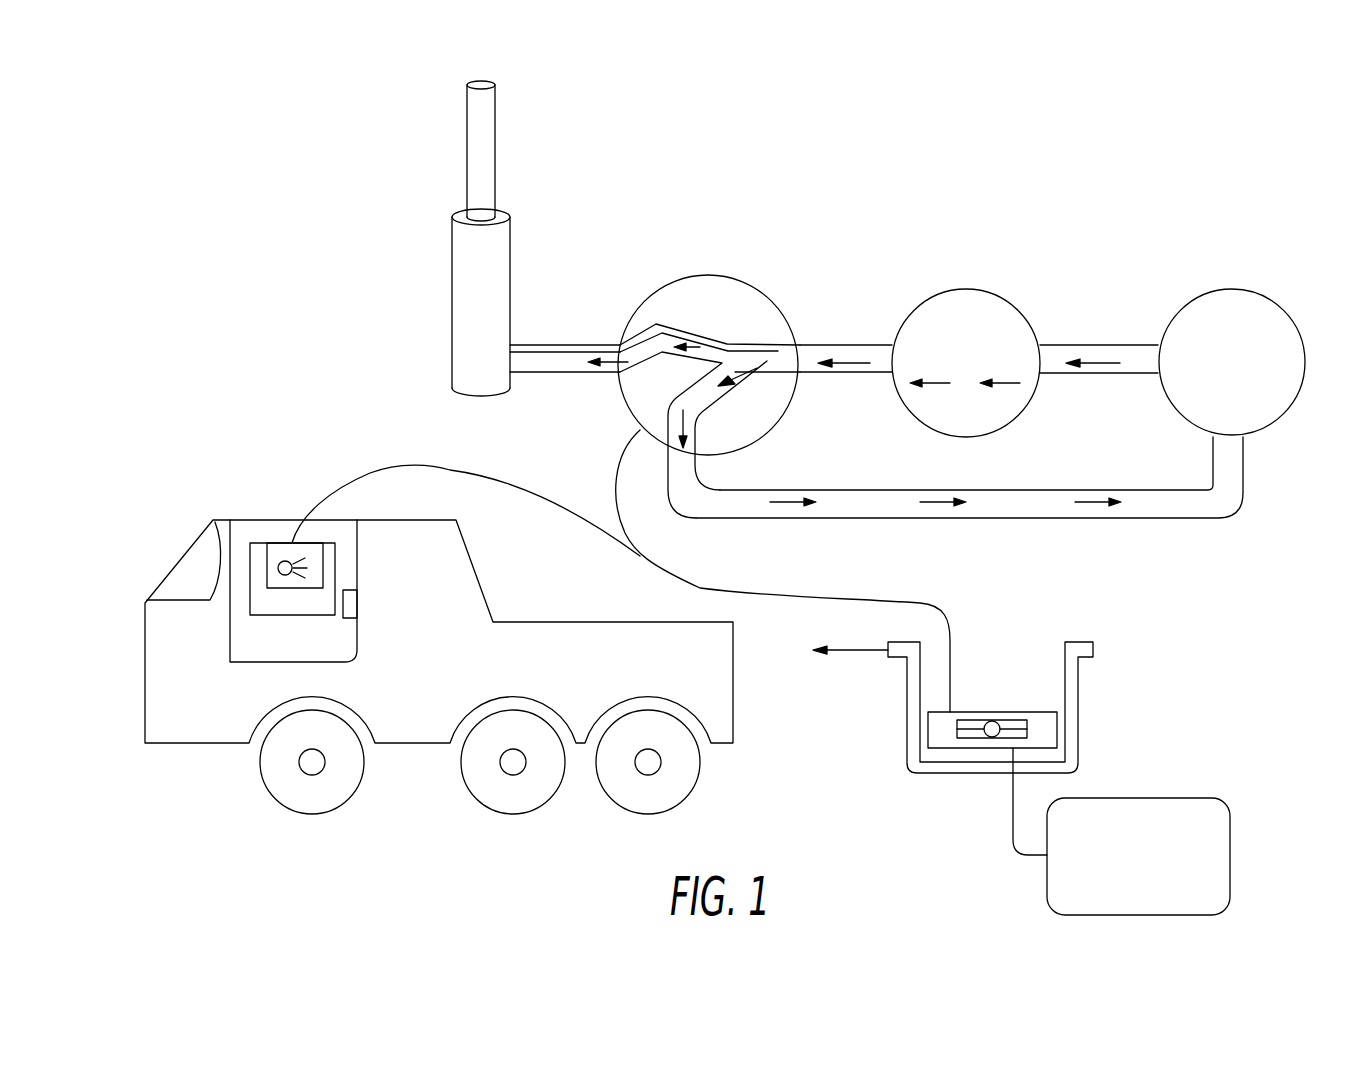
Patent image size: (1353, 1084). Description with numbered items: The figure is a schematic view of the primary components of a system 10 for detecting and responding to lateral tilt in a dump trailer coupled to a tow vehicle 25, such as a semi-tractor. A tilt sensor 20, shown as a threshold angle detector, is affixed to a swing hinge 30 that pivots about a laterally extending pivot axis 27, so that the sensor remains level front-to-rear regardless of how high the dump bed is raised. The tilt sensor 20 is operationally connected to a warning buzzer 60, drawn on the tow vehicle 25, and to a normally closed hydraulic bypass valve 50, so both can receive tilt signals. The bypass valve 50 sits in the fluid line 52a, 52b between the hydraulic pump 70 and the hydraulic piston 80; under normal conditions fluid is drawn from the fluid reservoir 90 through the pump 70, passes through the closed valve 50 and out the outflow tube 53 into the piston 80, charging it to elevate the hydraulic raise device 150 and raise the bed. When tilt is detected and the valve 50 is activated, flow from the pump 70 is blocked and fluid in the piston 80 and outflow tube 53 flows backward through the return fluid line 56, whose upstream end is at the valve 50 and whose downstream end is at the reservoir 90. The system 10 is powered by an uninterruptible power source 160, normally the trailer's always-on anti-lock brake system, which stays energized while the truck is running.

The system 10 is at (907, 347).
The tilt sensor 20 is at (1045, 736).
The tow vehicle 25 is at (415, 631).
The pivot axis 27 is at (853, 653).
The swing hinge 30 is at (1090, 641).
The hydraulic bypass valve 50 is at (755, 272).
The fluid line 52a is at (836, 340).
The fluid line 52b is at (1087, 336).
The outflow tube 53 is at (570, 343).
The return fluid line 56 is at (1102, 535).
The warning buzzer 60 is at (280, 543).
The hydraulic pump 70 is at (984, 283).
The hydraulic piston 80 is at (520, 251).
The fluid reservoir 90 is at (1239, 280).
The hydraulic raise device 150 is at (467, 238).
The uninterruptible power source 160 is at (1112, 885).